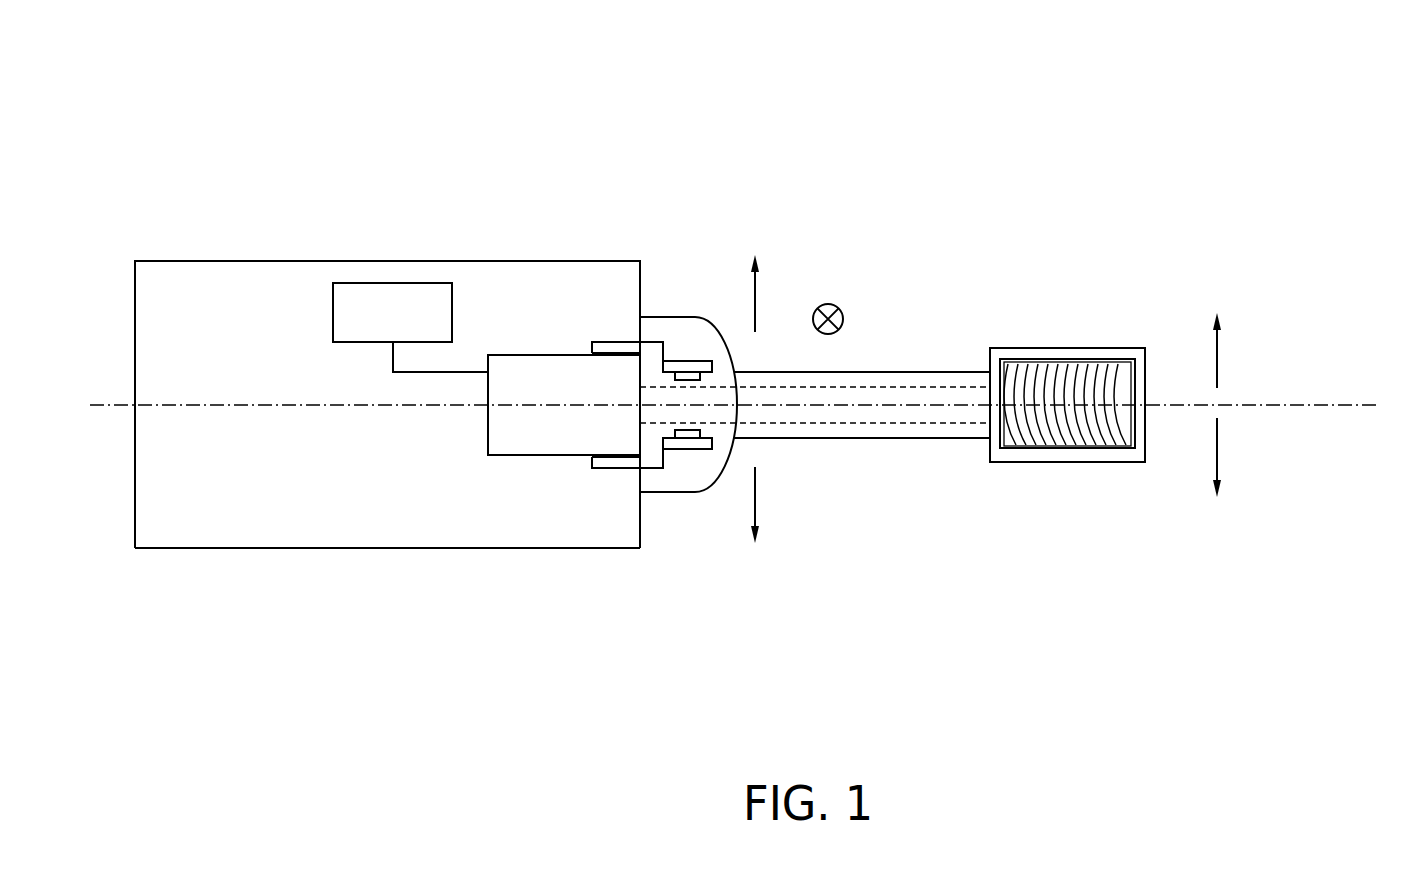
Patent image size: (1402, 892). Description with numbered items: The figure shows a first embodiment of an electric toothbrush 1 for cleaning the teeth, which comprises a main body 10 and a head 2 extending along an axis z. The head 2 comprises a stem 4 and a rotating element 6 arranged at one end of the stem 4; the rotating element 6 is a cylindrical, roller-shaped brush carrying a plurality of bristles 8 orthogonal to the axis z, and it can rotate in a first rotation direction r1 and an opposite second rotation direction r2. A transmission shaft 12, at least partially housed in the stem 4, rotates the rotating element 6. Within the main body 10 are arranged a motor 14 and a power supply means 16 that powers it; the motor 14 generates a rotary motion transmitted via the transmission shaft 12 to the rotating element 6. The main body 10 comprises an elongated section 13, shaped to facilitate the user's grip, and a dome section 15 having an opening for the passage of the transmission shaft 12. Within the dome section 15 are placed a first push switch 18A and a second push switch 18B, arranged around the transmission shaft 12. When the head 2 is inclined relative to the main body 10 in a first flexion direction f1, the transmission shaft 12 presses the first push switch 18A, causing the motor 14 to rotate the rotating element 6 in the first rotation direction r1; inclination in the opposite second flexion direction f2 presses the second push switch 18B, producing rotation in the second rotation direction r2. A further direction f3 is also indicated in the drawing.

The electric toothbrush 1 is at (1055, 187).
The head 2 is at (710, 473).
The stem 4 is at (858, 371).
The rotating element 6 is at (1098, 348).
The bristles 8 is at (1080, 378).
The main body 10 is at (228, 530).
The transmission shaft 12 is at (963, 370).
The elongated section 13 is at (447, 523).
The motor 14 is at (547, 358).
The dome section 15 is at (660, 485).
The power supply means 16 is at (368, 293).
The first push switch 18A is at (691, 449).
The second push switch 18B is at (688, 361).
The first flexion direction f1 is at (762, 298).
The second flexion direction f2 is at (757, 495).
The force direction f3 is at (838, 303).
The first rotation direction r1 is at (1220, 368).
The second rotation direction r2 is at (1220, 443).
The axis z is at (1294, 406).